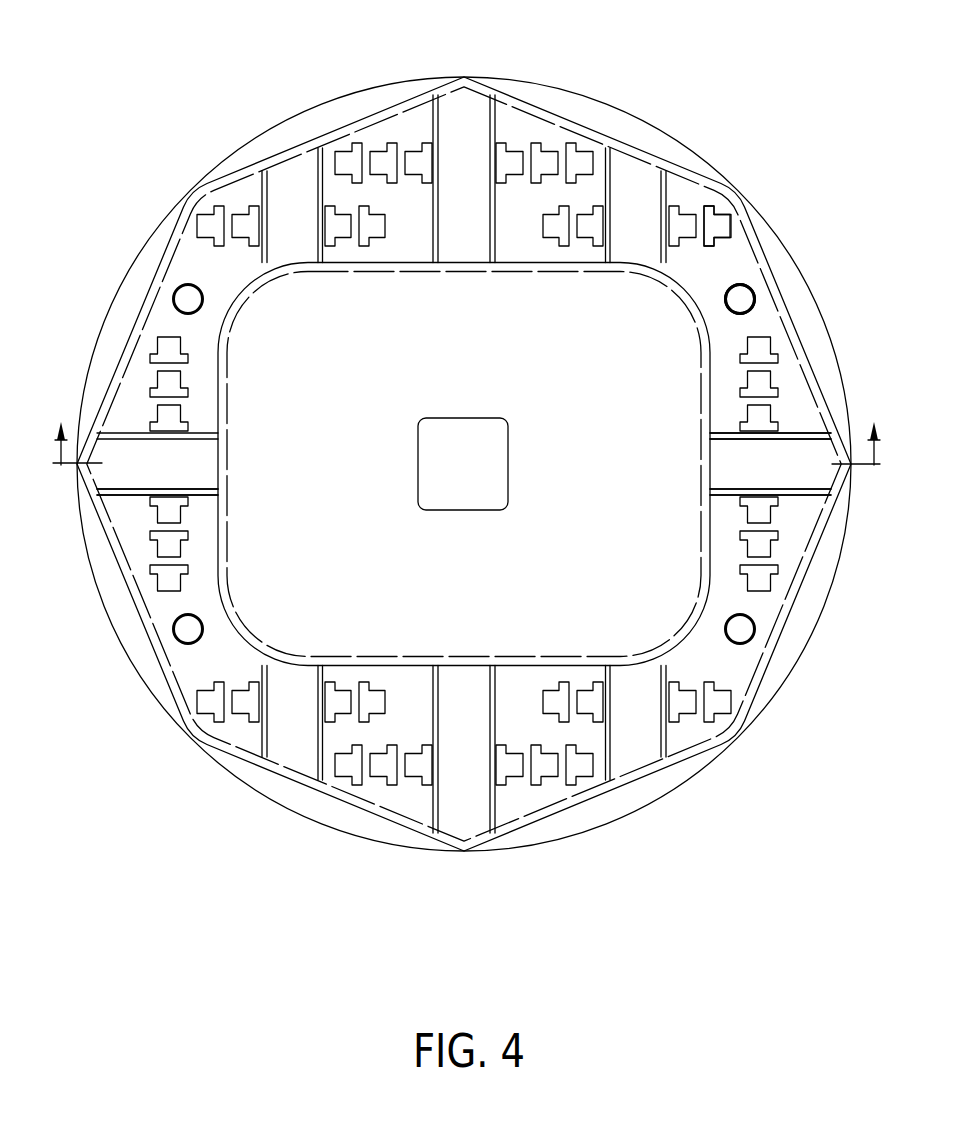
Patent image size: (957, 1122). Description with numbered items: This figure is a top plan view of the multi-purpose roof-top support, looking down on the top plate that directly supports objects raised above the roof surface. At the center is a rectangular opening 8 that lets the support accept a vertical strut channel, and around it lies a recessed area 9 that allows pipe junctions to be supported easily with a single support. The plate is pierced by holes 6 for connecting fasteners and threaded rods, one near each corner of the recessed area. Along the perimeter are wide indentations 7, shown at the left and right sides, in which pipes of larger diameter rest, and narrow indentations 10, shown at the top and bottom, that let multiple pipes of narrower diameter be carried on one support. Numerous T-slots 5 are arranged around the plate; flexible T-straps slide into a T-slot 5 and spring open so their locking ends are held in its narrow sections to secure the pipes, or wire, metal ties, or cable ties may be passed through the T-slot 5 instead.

The T-slot 5 is at (718, 213).
The holes 6 is at (752, 286).
The indentations 7 is at (848, 450).
The rectangular opening 8 is at (461, 418).
The recessed area 9 is at (581, 347).
The narrow indentations 10 is at (466, 100).